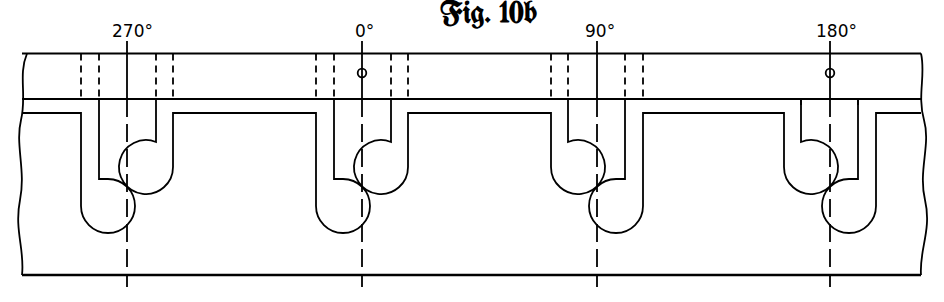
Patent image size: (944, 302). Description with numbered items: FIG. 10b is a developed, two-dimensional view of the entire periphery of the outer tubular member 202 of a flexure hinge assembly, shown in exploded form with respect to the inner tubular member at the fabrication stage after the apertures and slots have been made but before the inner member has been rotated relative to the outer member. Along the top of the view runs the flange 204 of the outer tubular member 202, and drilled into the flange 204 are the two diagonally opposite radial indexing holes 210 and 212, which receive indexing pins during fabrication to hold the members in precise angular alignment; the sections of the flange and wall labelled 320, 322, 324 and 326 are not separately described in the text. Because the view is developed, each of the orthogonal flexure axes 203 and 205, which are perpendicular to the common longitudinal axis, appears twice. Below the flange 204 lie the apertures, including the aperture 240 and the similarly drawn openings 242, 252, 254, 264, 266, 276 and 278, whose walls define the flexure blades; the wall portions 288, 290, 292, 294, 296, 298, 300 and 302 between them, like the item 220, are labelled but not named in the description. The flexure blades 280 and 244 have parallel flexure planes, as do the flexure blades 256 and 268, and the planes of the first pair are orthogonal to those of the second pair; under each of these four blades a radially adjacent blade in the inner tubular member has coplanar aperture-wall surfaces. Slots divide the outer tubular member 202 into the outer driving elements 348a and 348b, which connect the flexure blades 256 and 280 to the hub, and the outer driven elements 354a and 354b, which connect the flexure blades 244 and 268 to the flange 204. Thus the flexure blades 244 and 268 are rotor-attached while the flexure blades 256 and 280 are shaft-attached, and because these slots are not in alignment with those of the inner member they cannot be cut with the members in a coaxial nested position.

The outer tubular member 202 is at (733, 53).
The flange 204 is at (231, 60).
The flexure axis 205 is at (128, 188).
The flexure axis 203 is at (363, 187).
The radial indexing hole 210 is at (366, 74).
The radial indexing hole 212 is at (826, 73).
The spring 220 is at (228, 3).
The aperture 240 is at (332, 218).
The bulbous lobe 242 is at (400, 172).
The flexure blade 244 is at (372, 195).
The bulbous lobe 252 is at (552, 172).
The bulbous lobe 254 is at (627, 223).
The flexure blade 256 is at (580, 195).
The bulbous lobe 264 is at (791, 171).
The bulbous lobe 266 is at (861, 222).
The flexure blade 268 is at (819, 193).
The bulbous lobe 276 is at (93, 220).
The bulbous lobe 278 is at (167, 170).
The flexure blade 280 is at (142, 196).
The tooth 288 is at (320, 143).
The tooth 290 is at (402, 127).
The tooth 292 is at (552, 136).
The tooth 294 is at (635, 129).
The tooth 296 is at (787, 132).
The tooth 298 is at (867, 143).
The tooth 300 is at (87, 140).
The tooth 302 is at (163, 130).
The intermediate section 320 is at (473, 102).
The intermediate section 322 is at (705, 104).
The end section 324 is at (50, 104).
The intermediate section 326 is at (260, 104).
The outer driving element 348a is at (606, 110).
The outer driving element 348b is at (137, 71).
The outer driven element 354a is at (352, 112).
The outer driven element 354b is at (841, 117).